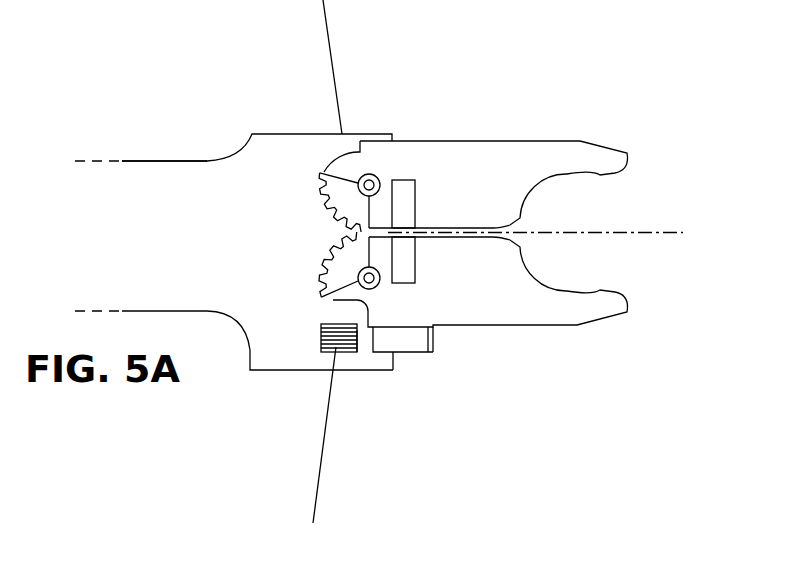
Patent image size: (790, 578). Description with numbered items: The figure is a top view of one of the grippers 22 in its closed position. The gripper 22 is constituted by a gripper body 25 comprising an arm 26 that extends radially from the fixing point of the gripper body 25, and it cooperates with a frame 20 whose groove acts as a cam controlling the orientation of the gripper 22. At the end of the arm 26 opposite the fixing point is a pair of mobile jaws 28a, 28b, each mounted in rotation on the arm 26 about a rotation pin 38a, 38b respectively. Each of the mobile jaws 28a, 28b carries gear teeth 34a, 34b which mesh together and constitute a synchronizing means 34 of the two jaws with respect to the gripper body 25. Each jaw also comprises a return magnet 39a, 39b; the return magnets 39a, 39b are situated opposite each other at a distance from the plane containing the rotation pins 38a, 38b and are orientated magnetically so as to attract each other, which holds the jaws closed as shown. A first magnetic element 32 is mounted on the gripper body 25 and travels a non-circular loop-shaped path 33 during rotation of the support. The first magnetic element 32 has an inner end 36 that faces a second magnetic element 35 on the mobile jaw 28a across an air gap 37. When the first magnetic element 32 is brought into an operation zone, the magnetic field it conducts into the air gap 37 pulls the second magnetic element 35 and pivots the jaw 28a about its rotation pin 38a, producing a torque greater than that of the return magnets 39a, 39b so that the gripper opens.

The frame 20 is at (222, 37).
The gripper 22 is at (667, 114).
The gripper body 25 is at (159, 150).
The arm 26 is at (155, 247).
The mobile jaw 28a is at (552, 308).
The mobile jaw 28b is at (533, 158).
The first magnetic element 32 is at (333, 347).
The path 33 is at (327, 18).
The synchronizing means 34 is at (273, 232).
The gear teeth 34a is at (320, 267).
The gear teeth 34b is at (318, 176).
The second magnetic element 35 is at (403, 342).
The inner end 36 is at (363, 342).
The air gap 37 is at (367, 342).
The rotation pin 38a is at (357, 280).
The rotation pin 38b is at (357, 190).
The return magnet 39a is at (408, 260).
The return magnet 39b is at (412, 198).